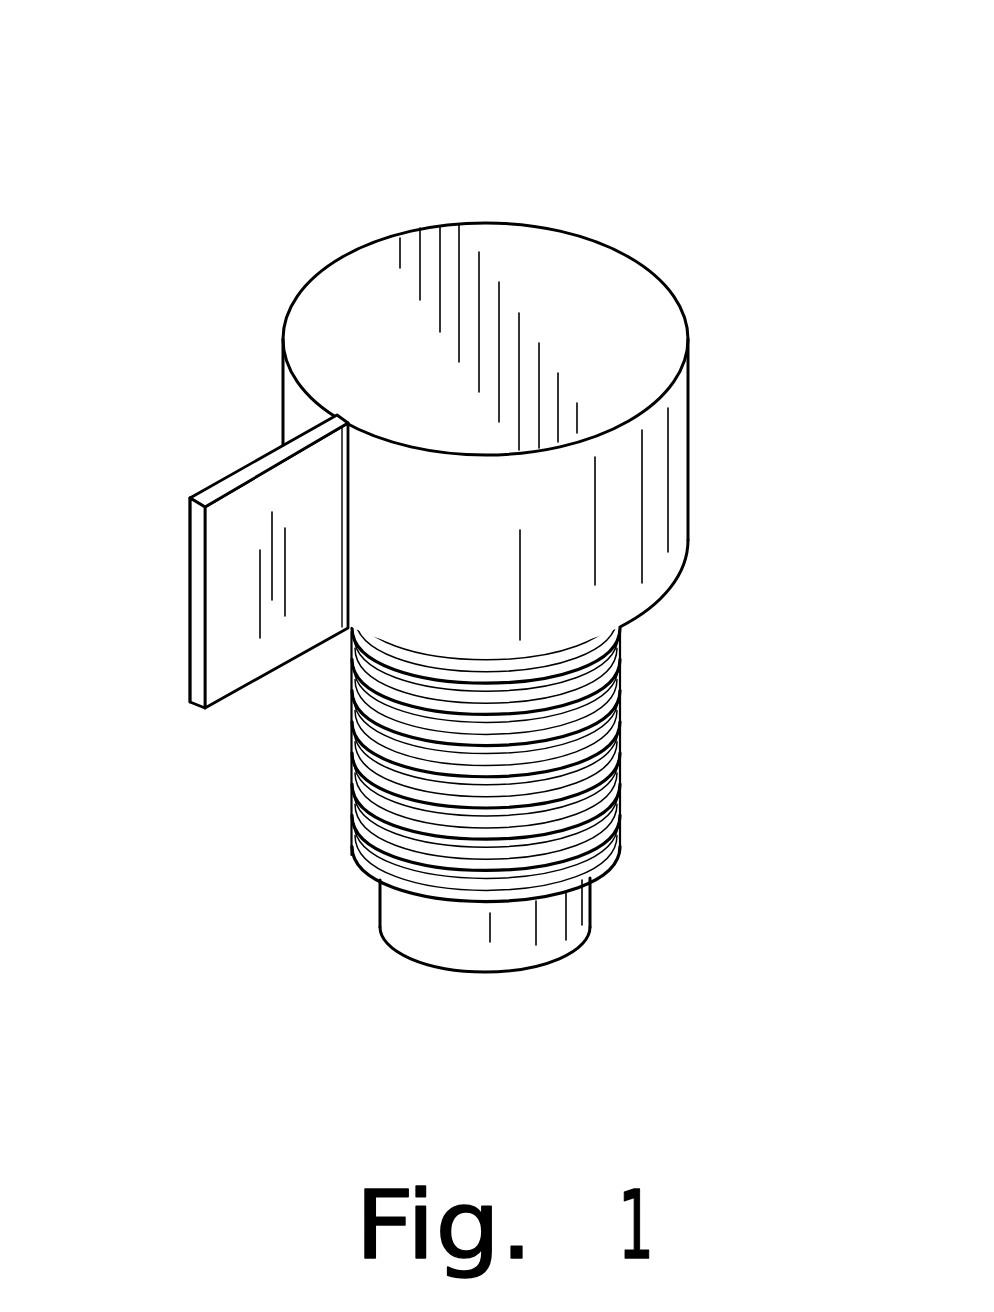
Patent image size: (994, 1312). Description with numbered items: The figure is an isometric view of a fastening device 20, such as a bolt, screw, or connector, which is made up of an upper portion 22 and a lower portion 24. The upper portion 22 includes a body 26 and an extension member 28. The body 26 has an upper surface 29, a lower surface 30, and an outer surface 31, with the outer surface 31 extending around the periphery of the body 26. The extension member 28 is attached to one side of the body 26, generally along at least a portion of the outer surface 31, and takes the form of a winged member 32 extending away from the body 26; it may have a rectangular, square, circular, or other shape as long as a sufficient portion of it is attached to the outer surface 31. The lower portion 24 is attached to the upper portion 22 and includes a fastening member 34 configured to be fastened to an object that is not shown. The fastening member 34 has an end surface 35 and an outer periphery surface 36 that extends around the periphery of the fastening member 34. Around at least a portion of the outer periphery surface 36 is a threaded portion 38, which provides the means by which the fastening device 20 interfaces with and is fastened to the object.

The fastening device 20 is at (465, 534).
The upper portion 22 is at (427, 422).
The lower portion 24 is at (544, 832).
The body 26 is at (686, 326).
The extension member 28 is at (214, 527).
The upper surface 29 is at (497, 236).
The lower surface 30 is at (660, 598).
The outer surface 31 is at (677, 507).
The winged member 32 is at (190, 592).
The fastening member 34 is at (353, 773).
The end surface 35 is at (507, 970).
The outer periphery surface 36 is at (590, 826).
The threaded portion 38 is at (354, 832).